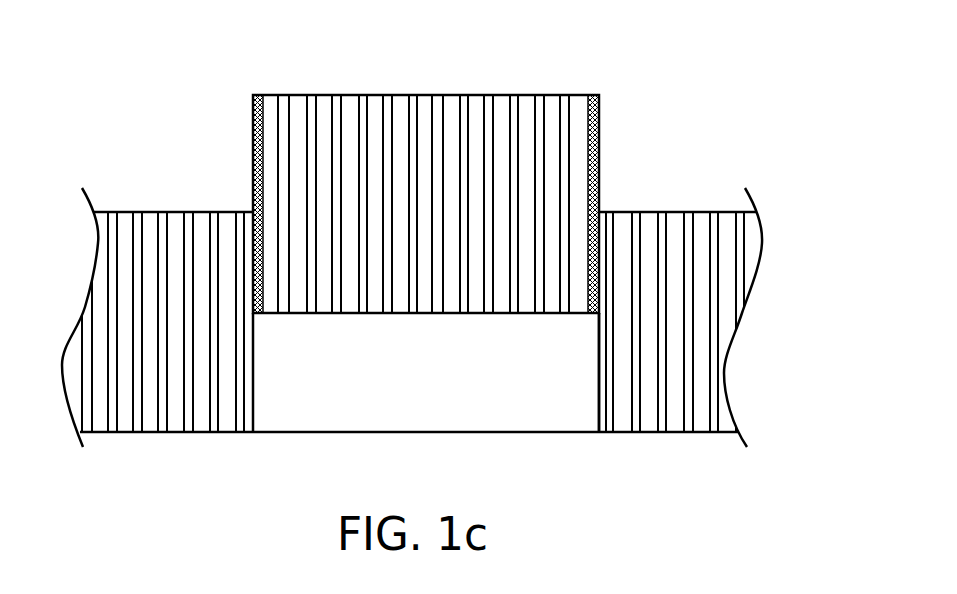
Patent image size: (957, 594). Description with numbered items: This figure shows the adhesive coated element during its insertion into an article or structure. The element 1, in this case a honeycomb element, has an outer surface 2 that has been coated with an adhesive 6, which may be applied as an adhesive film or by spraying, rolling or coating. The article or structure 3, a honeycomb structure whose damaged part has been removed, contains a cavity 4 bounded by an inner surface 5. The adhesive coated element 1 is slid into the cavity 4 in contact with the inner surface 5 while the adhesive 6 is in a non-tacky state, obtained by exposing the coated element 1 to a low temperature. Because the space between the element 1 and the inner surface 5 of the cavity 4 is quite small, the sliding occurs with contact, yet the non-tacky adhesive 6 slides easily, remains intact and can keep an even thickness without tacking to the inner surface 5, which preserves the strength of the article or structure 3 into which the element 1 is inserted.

The element 1 is at (473, 95).
The outer surface 2 is at (266, 109).
The article or structure 3 is at (743, 30).
The cavity 4 is at (363, 404).
The inner surface 5 is at (598, 386).
The adhesive 6 is at (600, 165).